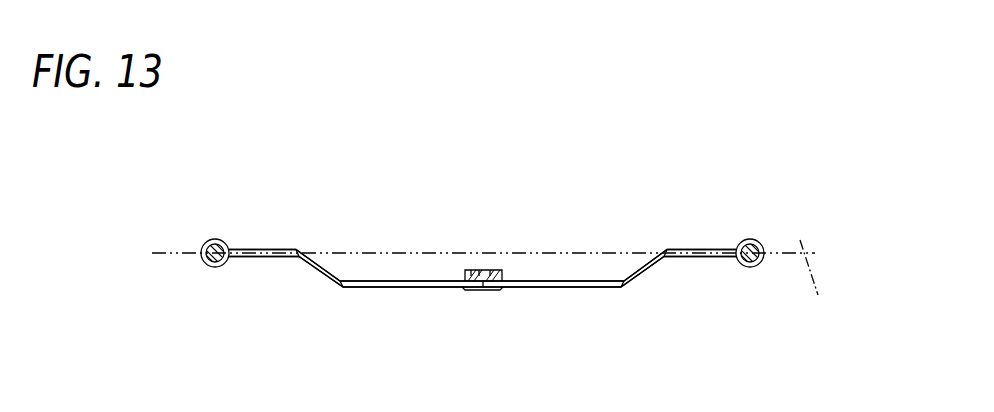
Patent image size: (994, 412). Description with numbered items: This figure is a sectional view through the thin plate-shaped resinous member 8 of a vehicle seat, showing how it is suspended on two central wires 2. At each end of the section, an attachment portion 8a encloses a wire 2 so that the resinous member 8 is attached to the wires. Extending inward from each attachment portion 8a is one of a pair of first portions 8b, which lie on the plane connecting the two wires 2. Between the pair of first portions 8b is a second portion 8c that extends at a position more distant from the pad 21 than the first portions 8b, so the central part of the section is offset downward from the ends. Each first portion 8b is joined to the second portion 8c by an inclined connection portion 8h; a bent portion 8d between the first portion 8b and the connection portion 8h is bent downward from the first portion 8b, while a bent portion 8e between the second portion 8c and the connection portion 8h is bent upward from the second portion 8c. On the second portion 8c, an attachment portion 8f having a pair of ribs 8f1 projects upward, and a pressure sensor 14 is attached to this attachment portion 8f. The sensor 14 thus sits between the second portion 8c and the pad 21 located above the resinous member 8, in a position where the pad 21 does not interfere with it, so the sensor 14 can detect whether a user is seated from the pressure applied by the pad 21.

The resinous member 8 is at (358, 173).
The attachment portion 8a is at (211, 242).
The first portions 8b is at (277, 250).
The second portion 8c is at (570, 288).
The bent portion 8d is at (302, 252).
The bent portion 8e is at (343, 282).
The attachment portion 8f is at (478, 290).
The ribs 8f1 is at (490, 272).
The connection portion 8h is at (323, 273).
The wire 2 is at (205, 263).
The sensor 14 is at (487, 290).
The pad 21 is at (817, 285).